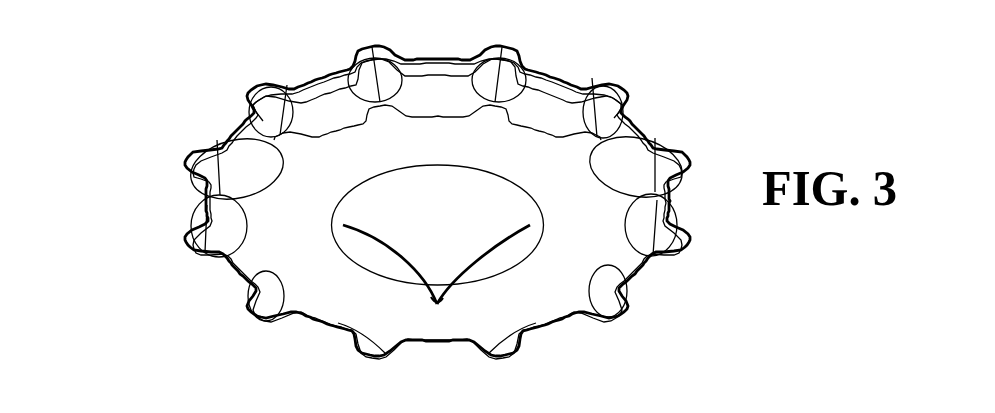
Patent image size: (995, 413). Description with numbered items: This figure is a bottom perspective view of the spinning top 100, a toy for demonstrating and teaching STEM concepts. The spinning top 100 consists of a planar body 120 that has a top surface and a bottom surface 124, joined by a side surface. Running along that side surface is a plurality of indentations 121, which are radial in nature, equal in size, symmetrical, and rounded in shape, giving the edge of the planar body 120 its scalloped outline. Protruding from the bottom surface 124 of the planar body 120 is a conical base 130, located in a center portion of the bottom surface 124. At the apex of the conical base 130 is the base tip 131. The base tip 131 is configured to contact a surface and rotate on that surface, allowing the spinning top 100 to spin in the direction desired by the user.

The spinning top 100 is at (143, 140).
The planar body 120 is at (183, 250).
The indentations 121 is at (550, 78).
The bottom surface 124 is at (604, 253).
The conical base 130 is at (393, 253).
The base tip 131 is at (431, 305).